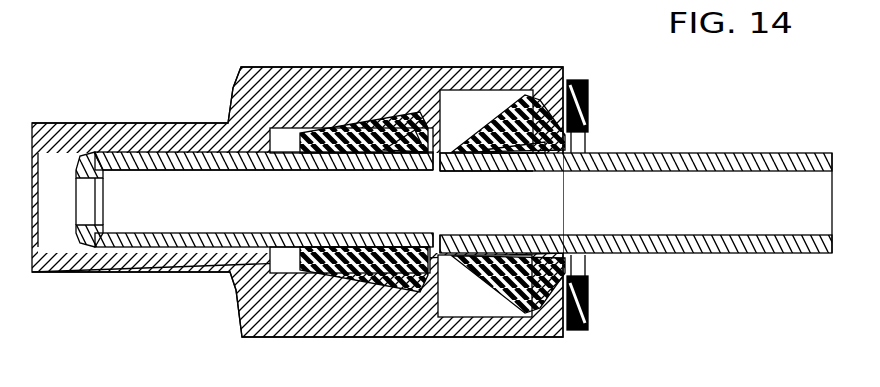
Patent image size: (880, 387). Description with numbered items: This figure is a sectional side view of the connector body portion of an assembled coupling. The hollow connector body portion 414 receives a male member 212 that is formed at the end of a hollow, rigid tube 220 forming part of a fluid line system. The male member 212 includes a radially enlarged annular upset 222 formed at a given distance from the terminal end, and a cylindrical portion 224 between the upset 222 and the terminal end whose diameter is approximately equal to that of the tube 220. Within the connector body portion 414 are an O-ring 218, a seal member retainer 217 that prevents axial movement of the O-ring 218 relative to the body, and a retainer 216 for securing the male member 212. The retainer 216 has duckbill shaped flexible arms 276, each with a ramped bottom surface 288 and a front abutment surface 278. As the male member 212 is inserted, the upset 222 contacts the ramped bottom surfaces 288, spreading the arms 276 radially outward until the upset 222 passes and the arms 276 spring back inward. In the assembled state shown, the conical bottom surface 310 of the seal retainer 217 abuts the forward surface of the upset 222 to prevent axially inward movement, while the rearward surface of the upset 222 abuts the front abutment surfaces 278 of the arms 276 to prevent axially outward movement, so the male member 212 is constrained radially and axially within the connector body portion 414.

The connector body portion 414 is at (413, 337).
The upset 222 is at (466, 108).
The O-ring 218 is at (298, 172).
The cylindrical portion 224 is at (207, 172).
The tube 220 is at (703, 153).
The male member 212 is at (462, 172).
The front abutment surface 278 is at (437, 150).
The seal member retainer 217 is at (345, 130).
The conical bottom surface 310 is at (412, 158).
The retainer 216 is at (516, 100).
The flexible arms 276 is at (490, 262).
The ramped bottom surface 288 is at (522, 170).